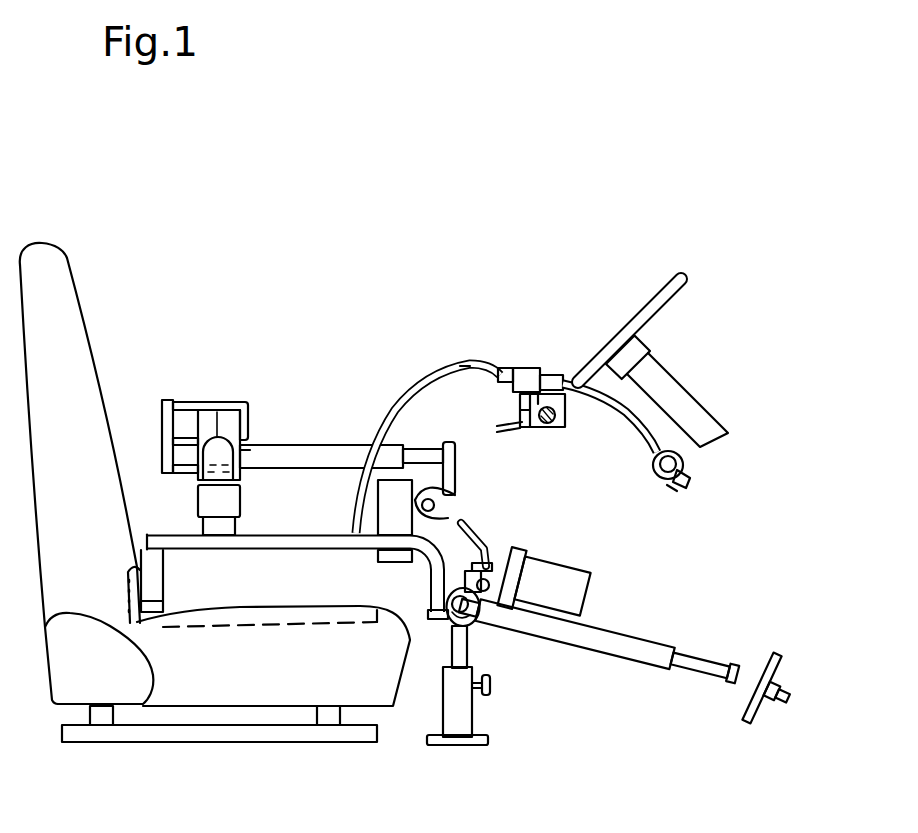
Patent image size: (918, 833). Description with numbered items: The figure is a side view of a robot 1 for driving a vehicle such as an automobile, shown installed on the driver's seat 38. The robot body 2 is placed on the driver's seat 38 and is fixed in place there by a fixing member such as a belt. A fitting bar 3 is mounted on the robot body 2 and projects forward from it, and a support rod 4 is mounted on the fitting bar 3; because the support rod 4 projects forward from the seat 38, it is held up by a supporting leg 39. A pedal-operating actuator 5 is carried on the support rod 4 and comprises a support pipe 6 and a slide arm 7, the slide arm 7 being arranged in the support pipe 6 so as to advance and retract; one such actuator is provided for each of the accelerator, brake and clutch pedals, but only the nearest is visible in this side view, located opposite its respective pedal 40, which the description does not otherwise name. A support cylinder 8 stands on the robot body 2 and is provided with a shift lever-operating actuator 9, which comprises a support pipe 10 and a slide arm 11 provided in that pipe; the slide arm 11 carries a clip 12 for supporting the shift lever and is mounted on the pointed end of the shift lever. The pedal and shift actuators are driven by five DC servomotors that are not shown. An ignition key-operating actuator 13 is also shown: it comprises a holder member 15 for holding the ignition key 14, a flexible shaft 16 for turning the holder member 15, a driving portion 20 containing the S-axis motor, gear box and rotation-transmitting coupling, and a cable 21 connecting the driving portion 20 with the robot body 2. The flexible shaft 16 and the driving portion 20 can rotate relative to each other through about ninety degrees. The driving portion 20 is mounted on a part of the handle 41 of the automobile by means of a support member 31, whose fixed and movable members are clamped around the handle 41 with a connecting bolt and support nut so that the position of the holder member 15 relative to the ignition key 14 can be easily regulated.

The robot 1 is at (217, 431).
The robot body 2 is at (325, 590).
The fitting bar 3 is at (430, 619).
The support rod 4 is at (480, 627).
The pedal-operating actuator 5 is at (635, 616).
The support pipe 6 is at (636, 652).
The slide arm 7 is at (706, 673).
The support cylinder 8 is at (213, 407).
The shift lever-operating actuator 9 is at (270, 439).
The support pipe 10 is at (313, 455).
The slide arm 11 is at (428, 445).
The clip 12 is at (404, 493).
The ignition key-operating actuator 13 is at (476, 352).
The ignition key 14 is at (680, 478).
The holder member 15 is at (657, 468).
The flexible shaft 16 is at (634, 420).
The driving portion 20 is at (534, 361).
The cable 21 is at (441, 370).
The support member 31 is at (557, 441).
The driver's seat 38 is at (223, 688).
The supporting leg 39 is at (467, 713).
The pedal 40 is at (763, 663).
The handle 41 is at (664, 306).